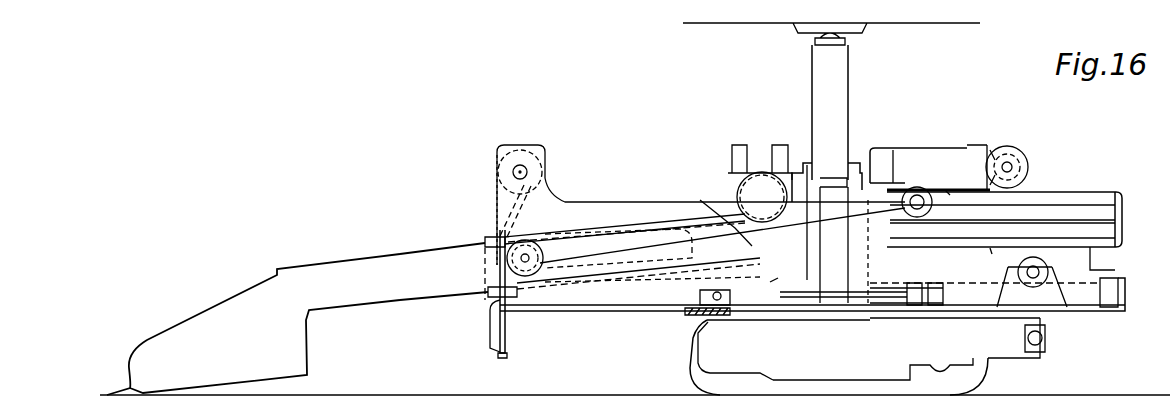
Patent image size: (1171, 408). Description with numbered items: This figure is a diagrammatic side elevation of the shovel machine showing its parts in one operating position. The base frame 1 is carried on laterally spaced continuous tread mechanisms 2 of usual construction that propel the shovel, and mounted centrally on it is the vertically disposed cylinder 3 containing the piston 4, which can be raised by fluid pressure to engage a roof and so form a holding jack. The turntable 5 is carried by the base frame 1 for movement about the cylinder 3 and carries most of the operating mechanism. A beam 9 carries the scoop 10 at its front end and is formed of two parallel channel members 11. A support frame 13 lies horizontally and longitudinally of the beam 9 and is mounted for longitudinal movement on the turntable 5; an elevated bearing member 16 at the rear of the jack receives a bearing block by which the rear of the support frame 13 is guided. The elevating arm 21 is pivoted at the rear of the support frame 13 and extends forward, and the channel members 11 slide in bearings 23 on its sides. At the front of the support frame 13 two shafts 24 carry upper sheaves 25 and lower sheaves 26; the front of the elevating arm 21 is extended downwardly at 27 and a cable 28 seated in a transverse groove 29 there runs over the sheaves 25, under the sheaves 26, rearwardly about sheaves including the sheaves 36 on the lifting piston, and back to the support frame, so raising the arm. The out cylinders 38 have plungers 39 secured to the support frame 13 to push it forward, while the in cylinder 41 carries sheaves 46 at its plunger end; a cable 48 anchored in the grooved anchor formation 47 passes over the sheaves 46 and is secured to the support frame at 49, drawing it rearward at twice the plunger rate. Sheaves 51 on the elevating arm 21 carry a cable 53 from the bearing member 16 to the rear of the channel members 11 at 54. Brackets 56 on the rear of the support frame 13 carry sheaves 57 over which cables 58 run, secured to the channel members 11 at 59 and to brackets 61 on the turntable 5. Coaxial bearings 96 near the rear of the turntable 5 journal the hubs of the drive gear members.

The base frame 1 is at (1010, 350).
The continuous tread mechanisms 2 is at (980, 383).
The cylinder 3 is at (928, 164).
The piston 4 is at (850, 105).
The turntable 5 is at (1074, 312).
The beam 9 is at (394, 303).
The scoop 10 is at (224, 302).
The channel members 11 is at (449, 298).
The support frame 13 is at (617, 203).
The bearing member 16 is at (990, 249).
The elevating arm 21 is at (488, 303).
The bearings 23 is at (517, 295).
The shafts 24 is at (527, 172).
The sheaves 25 is at (545, 148).
The sheaves 26 is at (565, 292).
The downward extension 27 is at (490, 330).
The cable 28 is at (506, 333).
The transverse groove 29 is at (499, 360).
The sheaves 36 is at (735, 184).
The hydraulic cylinders 38 is at (950, 288).
The plungers 39 is at (885, 305).
The hydraulic cylinder 41 is at (948, 148).
The sheaves 46 is at (1029, 165).
The anchor formation 47 is at (945, 230).
The cable 48 is at (895, 150).
The cable securing point 49 is at (905, 194).
The sheaves 51 is at (700, 200).
The cable 53 is at (1032, 224).
The cable securing point 54 is at (568, 238).
The brackets 56 is at (950, 214).
The sheaves 57 is at (946, 192).
The cables 58 is at (703, 300).
The cable securing point 59 is at (690, 252).
The brackets 61 is at (832, 268).
The bearings 96 is at (1048, 272).